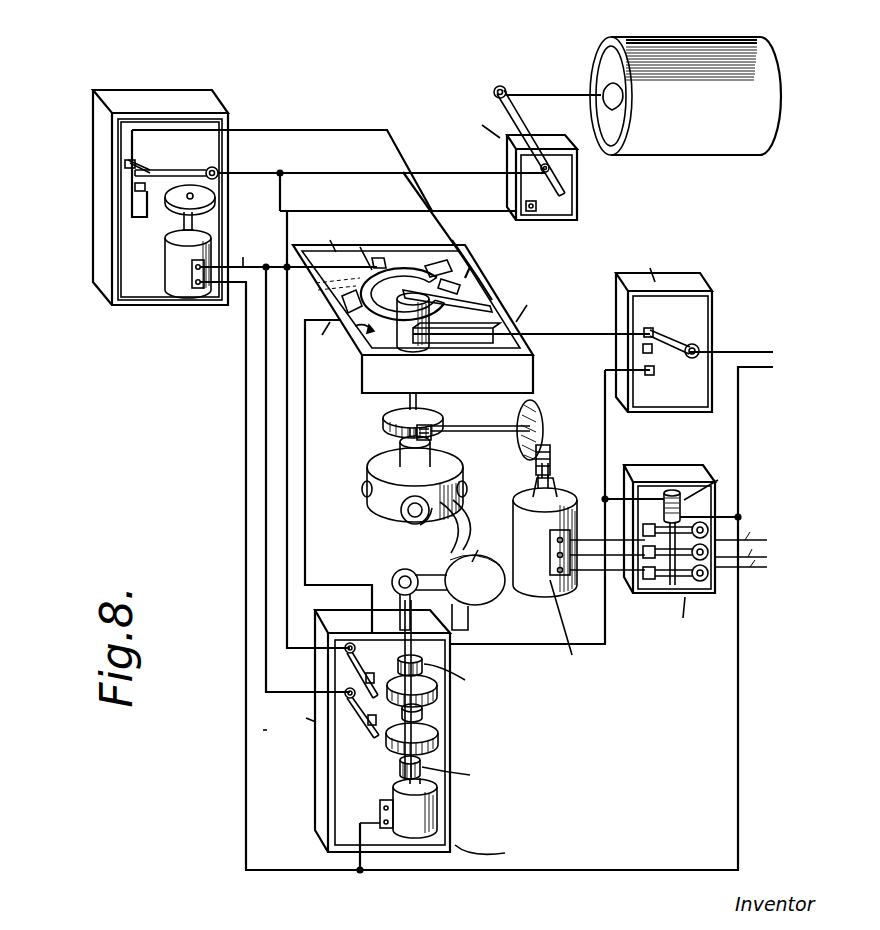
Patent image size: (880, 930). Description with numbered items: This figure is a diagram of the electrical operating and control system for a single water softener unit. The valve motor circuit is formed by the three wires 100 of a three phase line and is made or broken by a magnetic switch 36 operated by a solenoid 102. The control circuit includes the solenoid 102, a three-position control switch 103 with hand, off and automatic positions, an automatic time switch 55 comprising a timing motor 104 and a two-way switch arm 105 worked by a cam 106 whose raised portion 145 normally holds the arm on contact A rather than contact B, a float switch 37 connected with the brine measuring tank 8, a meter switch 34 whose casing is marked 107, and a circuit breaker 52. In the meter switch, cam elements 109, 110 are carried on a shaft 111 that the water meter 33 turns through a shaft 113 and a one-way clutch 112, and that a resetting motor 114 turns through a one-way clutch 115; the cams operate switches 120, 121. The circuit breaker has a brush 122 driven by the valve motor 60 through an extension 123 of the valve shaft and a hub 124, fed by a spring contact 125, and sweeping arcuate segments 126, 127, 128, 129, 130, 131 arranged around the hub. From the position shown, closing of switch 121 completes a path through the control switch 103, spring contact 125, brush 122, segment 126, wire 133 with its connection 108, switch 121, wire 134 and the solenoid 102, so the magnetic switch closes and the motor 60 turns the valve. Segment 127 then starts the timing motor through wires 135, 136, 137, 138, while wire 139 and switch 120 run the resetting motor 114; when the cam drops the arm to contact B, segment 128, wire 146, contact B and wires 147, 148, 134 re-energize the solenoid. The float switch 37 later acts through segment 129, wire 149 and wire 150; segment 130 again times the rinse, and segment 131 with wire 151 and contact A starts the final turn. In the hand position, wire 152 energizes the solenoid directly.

The brine measuring tank 8 is at (642, 37).
The water meter 33 is at (490, 598).
The meter switch 34 is at (345, 850).
The magnetic switch 36 is at (700, 600).
The float switch 37 is at (578, 176).
The circuit breaker 52 is at (369, 246).
The time switch 55 is at (215, 305).
The valve operating motor 60 is at (537, 577).
The three wires of a three phase alternating current line 100 is at (578, 572).
The solenoid 102 is at (664, 508).
The three-position control switch 103 is at (692, 300).
The timing motor 104 is at (167, 287).
The two-way switch 105 is at (155, 172).
The cam 106 is at (200, 185).
The meter switch 107 is at (315, 822).
The wire connection 108 is at (324, 335).
The cam element 109 is at (388, 743).
The cam element 110 is at (397, 665).
The shaft 111 is at (424, 706).
The one-way clutch 112 is at (430, 650).
The shaft 113 is at (400, 610).
The resetting motor 114 is at (407, 845).
The one-way clutch 115 is at (442, 768).
The cam operated switch 120 is at (368, 728).
The cam operated switch 121 is at (345, 668).
The brush element 122 is at (492, 300).
The extension 123 is at (446, 418).
The hub 124 is at (368, 352).
The spring contact 125 is at (495, 338).
The arcuate contact segment 126 is at (462, 289).
The arcuate contact segment 127 is at (340, 298).
The arcuate contact segment 128 is at (330, 240).
The arcuate contact segment 129 is at (410, 266).
The arcuate contact segment 130 is at (456, 250).
The arcuate contact segment 131 is at (470, 262).
The wire 133 is at (306, 508).
The wire 134 is at (470, 648).
The wire 135 is at (278, 265).
The wire 136 is at (262, 262).
The wire 137 is at (246, 460).
The wire 138 is at (740, 728).
The wire 139 is at (267, 728).
The raised portion 145 is at (216, 201).
The wire 146 is at (306, 209).
The wire 147 is at (279, 170).
The wire 148 is at (267, 382).
The wire 149 is at (480, 208).
The wire 150 is at (379, 173).
The wire 151 is at (284, 130).
The wire 152 is at (604, 405).
The contact point A is at (127, 162).
The contact point B is at (137, 187).